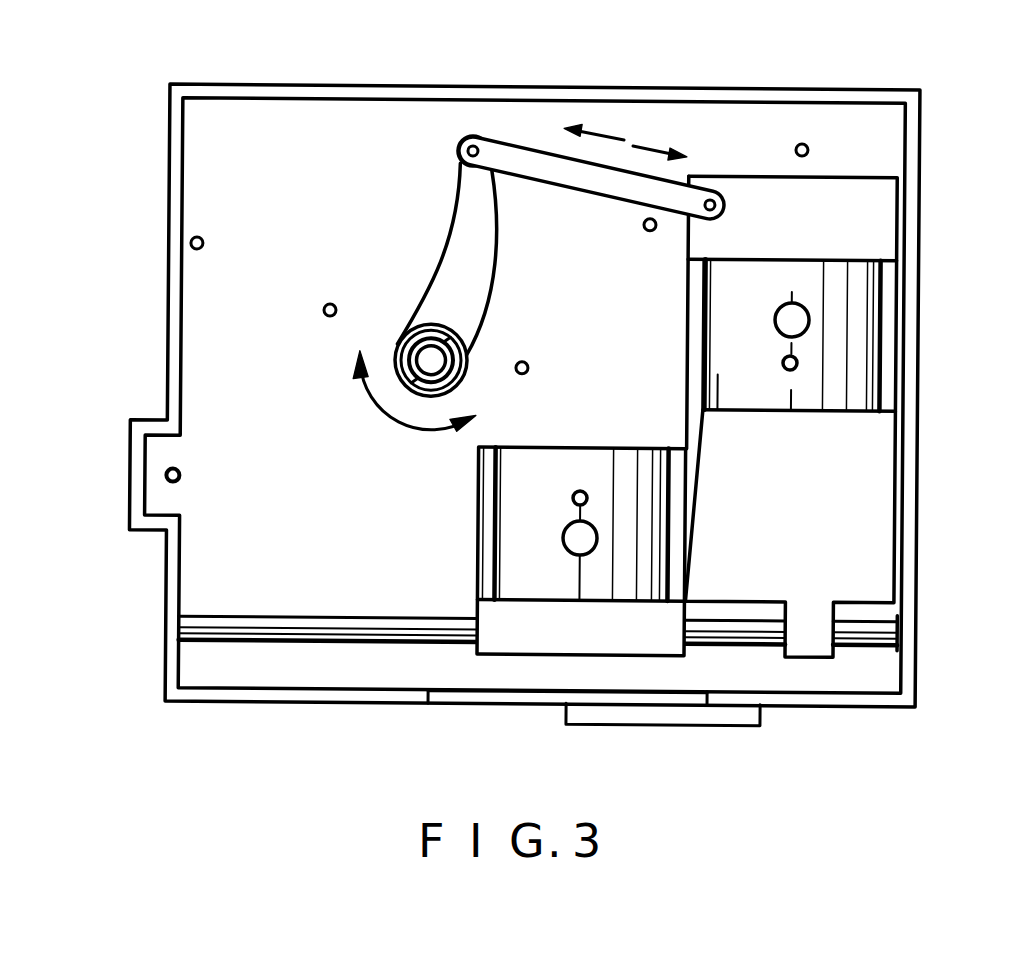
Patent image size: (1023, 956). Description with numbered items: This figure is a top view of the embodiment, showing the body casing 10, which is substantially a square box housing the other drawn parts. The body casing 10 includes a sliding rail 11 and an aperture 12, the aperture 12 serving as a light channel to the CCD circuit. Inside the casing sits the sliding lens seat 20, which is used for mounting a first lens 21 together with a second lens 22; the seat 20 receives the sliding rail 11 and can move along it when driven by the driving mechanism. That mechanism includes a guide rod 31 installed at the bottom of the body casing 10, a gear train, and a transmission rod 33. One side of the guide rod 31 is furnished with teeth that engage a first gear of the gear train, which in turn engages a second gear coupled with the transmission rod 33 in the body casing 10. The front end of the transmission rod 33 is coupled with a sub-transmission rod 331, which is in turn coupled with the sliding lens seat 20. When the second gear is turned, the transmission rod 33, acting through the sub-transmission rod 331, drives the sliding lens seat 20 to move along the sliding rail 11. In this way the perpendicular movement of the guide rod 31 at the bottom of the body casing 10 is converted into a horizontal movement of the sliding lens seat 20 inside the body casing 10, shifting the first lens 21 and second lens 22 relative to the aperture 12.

The body casing 10 is at (160, 294).
The sliding rail 11 is at (222, 633).
The aperture 12 is at (410, 696).
The sliding lens seat 20 is at (846, 417).
The first lens 21 is at (532, 588).
The guide slot 22 is at (868, 352).
The guide rod 31 is at (716, 721).
The transmission rod 33 is at (453, 149).
The sub-transmission rod 331 is at (531, 153).